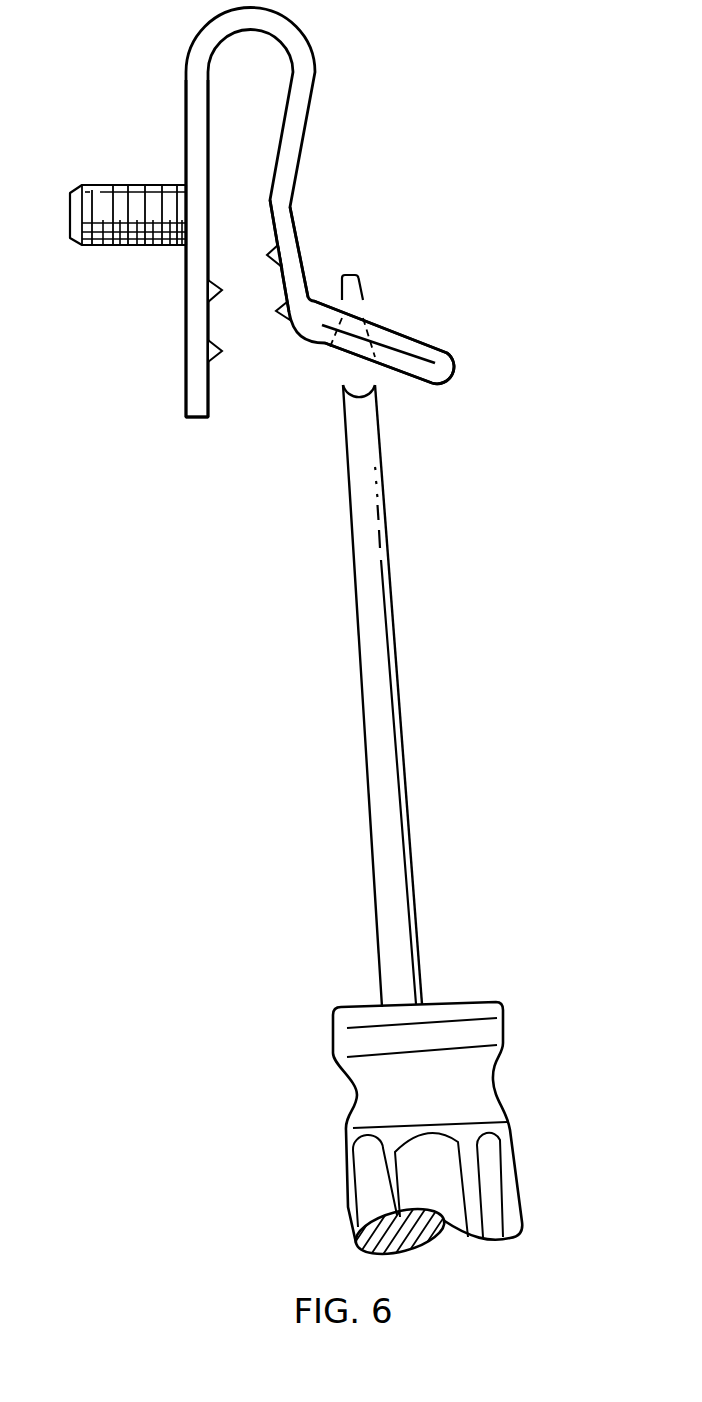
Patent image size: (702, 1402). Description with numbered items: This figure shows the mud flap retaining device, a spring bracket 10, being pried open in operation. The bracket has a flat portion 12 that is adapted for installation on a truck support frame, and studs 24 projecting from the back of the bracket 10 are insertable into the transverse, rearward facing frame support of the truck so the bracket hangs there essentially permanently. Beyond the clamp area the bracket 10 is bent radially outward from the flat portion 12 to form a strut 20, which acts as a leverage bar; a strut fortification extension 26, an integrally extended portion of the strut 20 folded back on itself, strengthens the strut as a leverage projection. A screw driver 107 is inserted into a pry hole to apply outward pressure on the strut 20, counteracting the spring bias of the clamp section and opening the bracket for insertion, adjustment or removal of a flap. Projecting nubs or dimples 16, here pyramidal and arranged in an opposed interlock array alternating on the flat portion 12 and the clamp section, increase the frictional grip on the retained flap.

The spring bracket 10 is at (328, 131).
The flat portion 12 is at (185, 382).
The projecting nubs or dimples 16 is at (249, 310).
The strut 20 is at (413, 383).
The studs 24 is at (120, 185).
The strut fortification extension 26 is at (411, 345).
The screw driver 107 is at (495, 1000).